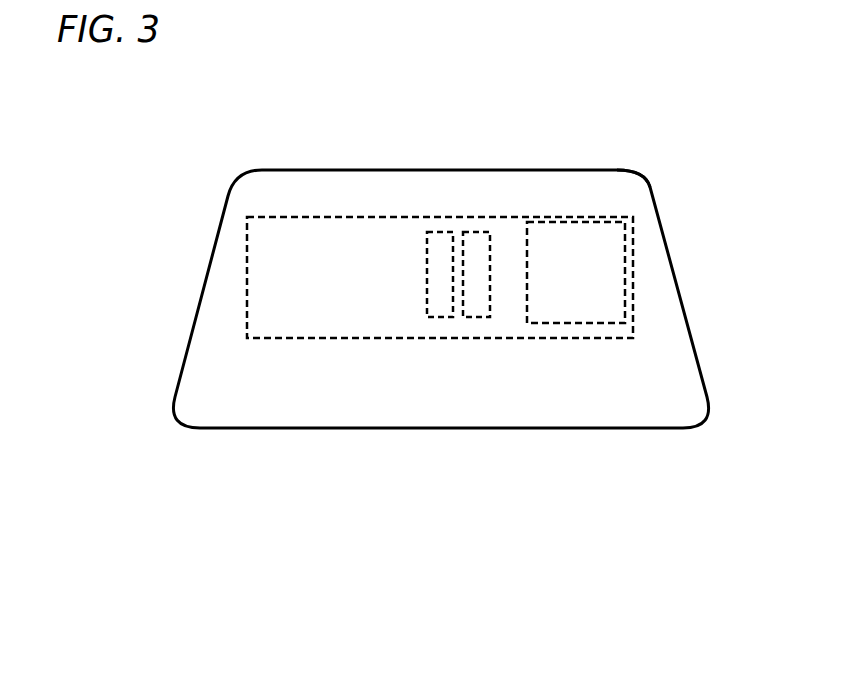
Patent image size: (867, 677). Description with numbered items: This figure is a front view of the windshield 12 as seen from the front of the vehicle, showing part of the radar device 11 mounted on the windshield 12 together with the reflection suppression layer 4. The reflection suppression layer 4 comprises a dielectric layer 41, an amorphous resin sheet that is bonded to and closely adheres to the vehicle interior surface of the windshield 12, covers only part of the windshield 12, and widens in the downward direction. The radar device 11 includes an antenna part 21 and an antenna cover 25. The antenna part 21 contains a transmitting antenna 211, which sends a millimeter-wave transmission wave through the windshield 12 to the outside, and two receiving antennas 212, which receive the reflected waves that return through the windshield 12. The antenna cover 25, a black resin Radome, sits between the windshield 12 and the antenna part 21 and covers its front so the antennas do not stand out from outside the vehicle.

The windshield 12 is at (449, 145).
The reflection suppression layer 4 is at (710, 152).
The dielectric layer 41 is at (632, 194).
The antenna cover 25 is at (350, 338).
The receiving antenna 212 is at (442, 305).
The transmitting antenna 211 is at (587, 307).
The antenna part 21 is at (532, 498).
The radar device 11 is at (593, 563).